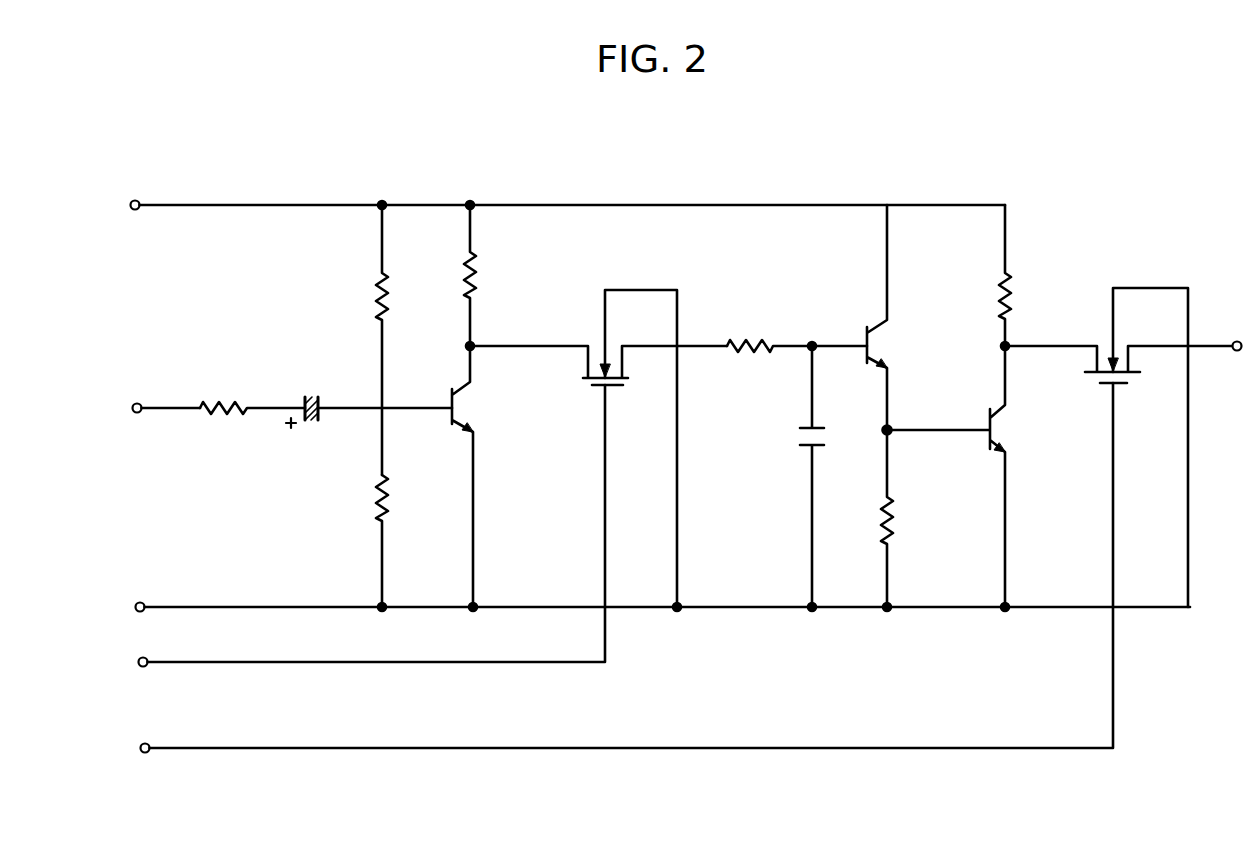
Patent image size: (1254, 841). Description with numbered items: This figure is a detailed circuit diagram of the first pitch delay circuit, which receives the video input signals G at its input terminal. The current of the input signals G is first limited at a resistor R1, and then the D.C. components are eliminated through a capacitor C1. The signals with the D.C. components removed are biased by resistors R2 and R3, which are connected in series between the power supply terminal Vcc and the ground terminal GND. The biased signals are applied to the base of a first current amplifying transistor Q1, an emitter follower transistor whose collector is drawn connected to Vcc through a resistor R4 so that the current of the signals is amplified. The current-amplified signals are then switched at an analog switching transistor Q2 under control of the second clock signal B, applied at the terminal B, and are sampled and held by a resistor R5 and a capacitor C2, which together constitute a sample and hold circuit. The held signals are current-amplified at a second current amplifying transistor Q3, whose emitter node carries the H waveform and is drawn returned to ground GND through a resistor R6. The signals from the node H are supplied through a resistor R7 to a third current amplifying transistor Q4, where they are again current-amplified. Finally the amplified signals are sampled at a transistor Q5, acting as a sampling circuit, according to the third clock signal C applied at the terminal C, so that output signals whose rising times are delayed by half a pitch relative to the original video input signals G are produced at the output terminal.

The resistor R1 is at (252, 392).
The resistor R2 is at (403, 338).
The resistor R3 is at (403, 543).
The resistor R4 is at (491, 275).
The resistor R5 is at (797, 331).
The resistor R6 is at (910, 520).
The resistor R7 is at (1029, 277).
The capacitor C1 is at (369, 426).
The capacitor C2 is at (795, 476).
The first current amplifying transistor Q1 is at (483, 478).
The analog switching transistor Q2 is at (598, 450).
The second current amplifying transistor Q3 is at (898, 317).
The third current amplifying transistor Q4 is at (964, 478).
The sampling transistor Q5 is at (1123, 447).
The H waveform signal H is at (890, 427).
The power supply terminal Vcc is at (549, 207).
The video input signals G is at (153, 410).
The ground terminal GND is at (631, 610).
The second clock signal B is at (357, 531).
The third clock signal C is at (614, 573).